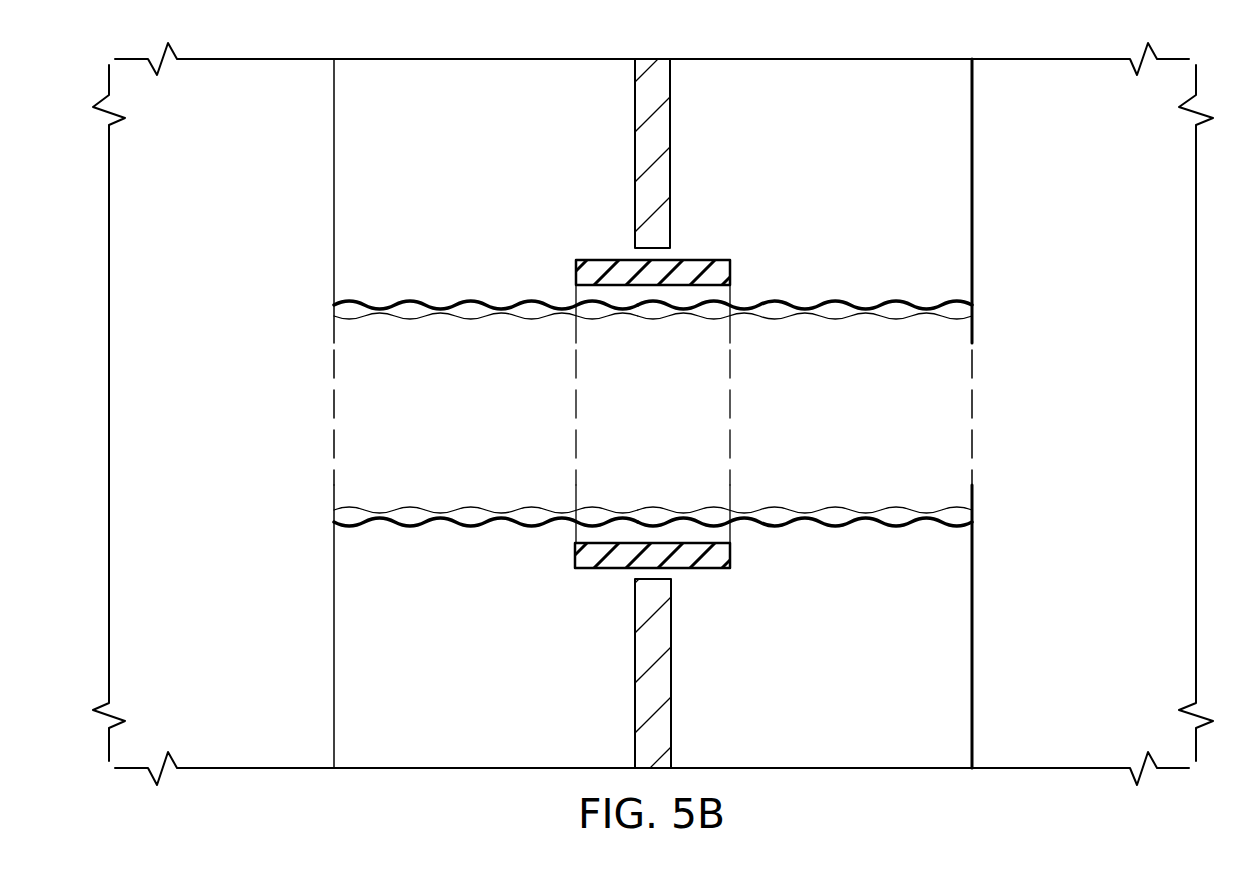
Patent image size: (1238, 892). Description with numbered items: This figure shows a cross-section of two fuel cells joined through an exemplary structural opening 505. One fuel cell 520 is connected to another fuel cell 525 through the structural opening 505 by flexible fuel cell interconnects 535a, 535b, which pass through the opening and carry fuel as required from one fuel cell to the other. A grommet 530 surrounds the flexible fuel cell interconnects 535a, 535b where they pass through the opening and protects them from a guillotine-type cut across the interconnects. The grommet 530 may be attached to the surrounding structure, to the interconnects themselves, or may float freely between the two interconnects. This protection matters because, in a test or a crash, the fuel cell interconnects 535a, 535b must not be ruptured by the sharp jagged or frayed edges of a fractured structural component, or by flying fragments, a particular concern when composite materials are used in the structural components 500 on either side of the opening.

The structural component 500 is at (635, 155).
The structural opening 505 is at (729, 239).
The fuel cell 520 is at (244, 430).
The fuel cell 525 is at (1106, 430).
The grommet 530 is at (705, 570).
The flexible fuel cell interconnect 535a is at (481, 528).
The flexible fuel cell interconnect 535b is at (822, 528).